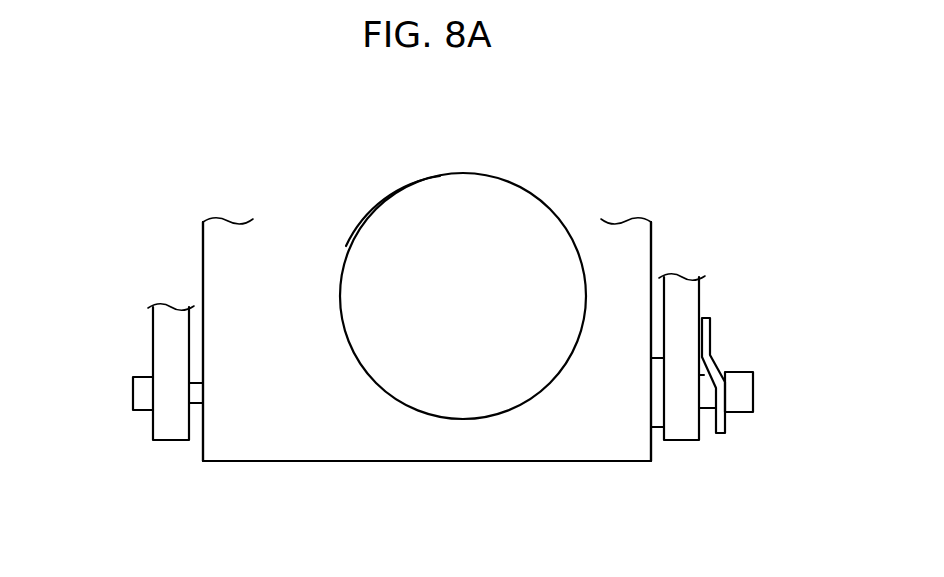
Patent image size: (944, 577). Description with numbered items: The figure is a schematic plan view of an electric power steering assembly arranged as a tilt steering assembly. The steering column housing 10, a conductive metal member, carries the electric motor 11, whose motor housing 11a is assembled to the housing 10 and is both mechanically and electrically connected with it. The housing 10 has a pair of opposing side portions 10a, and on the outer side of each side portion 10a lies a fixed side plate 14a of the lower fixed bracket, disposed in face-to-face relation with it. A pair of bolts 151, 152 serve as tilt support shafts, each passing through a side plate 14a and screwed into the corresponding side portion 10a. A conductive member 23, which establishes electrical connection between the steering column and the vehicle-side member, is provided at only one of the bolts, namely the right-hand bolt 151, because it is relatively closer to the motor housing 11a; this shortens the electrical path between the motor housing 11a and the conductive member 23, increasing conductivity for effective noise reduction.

The housing 10 is at (277, 463).
The side portion 10a is at (203, 257).
The electric motor 11 is at (483, 177).
The motor housing 11a is at (410, 187).
The fixed side plate 14a is at (163, 344).
The bolt 151 is at (755, 388).
The bolt 152 is at (140, 392).
The conductive member 23 is at (721, 433).